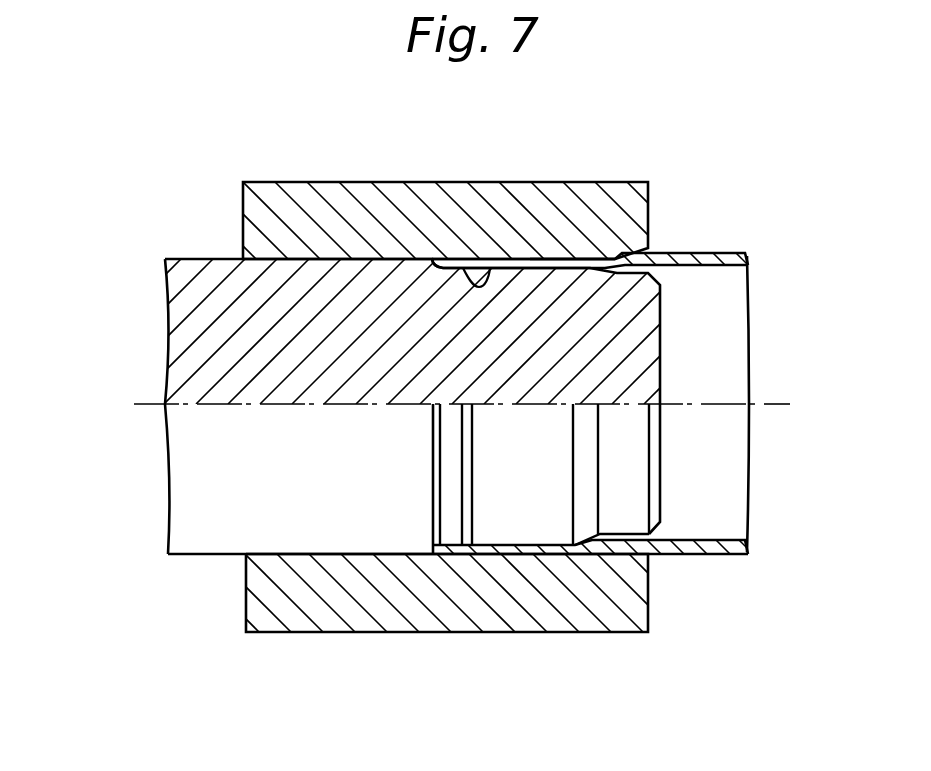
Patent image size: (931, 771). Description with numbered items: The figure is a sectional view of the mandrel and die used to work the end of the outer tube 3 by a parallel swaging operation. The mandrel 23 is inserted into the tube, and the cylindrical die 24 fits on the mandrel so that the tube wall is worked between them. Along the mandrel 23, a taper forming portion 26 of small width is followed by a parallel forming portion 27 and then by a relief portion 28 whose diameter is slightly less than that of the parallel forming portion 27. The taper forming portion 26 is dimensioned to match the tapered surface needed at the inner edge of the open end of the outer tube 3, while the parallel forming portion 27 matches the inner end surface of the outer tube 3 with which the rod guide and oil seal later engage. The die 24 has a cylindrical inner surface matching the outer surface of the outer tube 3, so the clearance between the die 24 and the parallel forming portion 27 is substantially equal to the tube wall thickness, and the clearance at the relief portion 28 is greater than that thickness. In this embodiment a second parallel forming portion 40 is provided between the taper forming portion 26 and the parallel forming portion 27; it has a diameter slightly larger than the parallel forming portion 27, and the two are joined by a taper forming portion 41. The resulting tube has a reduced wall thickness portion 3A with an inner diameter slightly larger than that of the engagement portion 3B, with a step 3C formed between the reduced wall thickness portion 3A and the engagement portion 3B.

The outer tube 3 is at (708, 240).
The reduced wall thickness portion 3A is at (451, 258).
The engagement portion 3B is at (536, 257).
The step 3C is at (490, 268).
The mandrel 23 is at (157, 523).
The die 24 is at (292, 645).
The taper forming portion 26 is at (437, 492).
The parallel forming portion 27 is at (549, 522).
The relief portion 28 is at (630, 512).
The second parallel forming portion 40 is at (450, 528).
The taper forming portion 41 is at (468, 502).